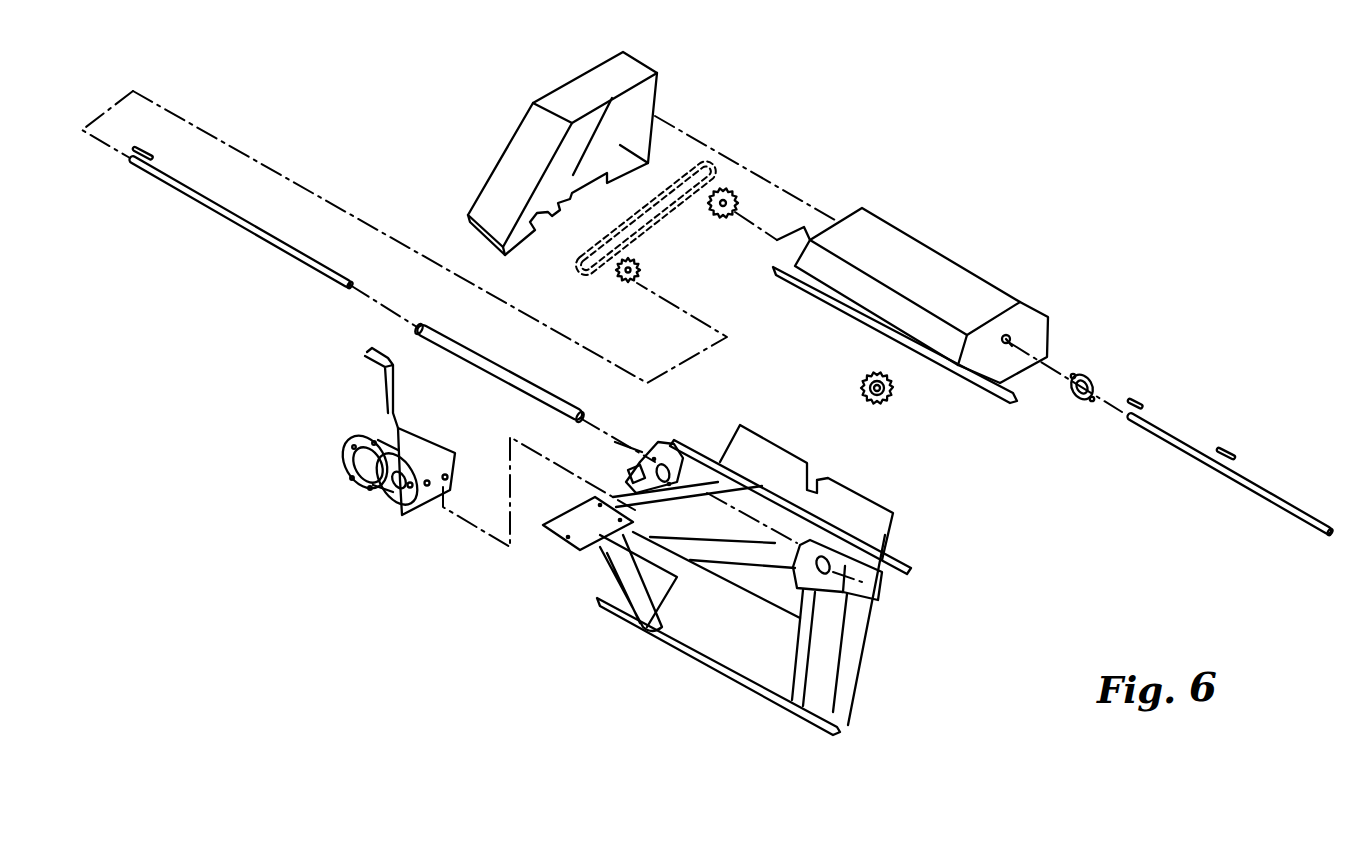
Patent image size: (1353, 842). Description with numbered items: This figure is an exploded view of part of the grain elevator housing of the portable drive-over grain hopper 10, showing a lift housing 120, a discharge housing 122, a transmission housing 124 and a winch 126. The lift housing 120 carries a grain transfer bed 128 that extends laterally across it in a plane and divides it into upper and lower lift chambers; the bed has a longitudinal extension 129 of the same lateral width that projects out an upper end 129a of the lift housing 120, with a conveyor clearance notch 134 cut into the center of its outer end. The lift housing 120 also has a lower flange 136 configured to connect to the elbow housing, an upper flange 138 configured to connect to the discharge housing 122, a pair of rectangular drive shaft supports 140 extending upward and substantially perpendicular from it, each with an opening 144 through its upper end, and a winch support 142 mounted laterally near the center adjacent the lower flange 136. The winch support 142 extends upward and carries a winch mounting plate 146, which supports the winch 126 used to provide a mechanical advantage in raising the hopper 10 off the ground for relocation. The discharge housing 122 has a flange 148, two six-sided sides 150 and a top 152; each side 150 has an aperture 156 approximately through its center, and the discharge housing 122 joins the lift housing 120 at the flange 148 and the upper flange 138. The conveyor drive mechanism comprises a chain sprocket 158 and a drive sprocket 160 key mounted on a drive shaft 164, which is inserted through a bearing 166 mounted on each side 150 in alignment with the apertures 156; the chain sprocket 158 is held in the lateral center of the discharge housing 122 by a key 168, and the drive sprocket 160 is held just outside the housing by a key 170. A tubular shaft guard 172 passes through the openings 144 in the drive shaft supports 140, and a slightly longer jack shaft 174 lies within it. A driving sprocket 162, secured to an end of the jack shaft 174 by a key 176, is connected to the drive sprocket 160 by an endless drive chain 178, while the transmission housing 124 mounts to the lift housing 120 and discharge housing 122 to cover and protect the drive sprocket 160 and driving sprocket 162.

The portable drive-over grain hopper 10 is at (968, 210).
The lift housing 120 is at (836, 695).
The discharge housing 122 is at (880, 227).
The transmission housing 124 is at (589, 101).
The winch 126 is at (363, 495).
The grain transfer bed 128 is at (755, 560).
The longitudinal extension 129 is at (750, 452).
The upper end 129a is at (898, 560).
The conveyor clearance notch 134 is at (812, 480).
The lower flange 136 is at (815, 725).
The upper flange 138 is at (913, 583).
The drive shaft supports 140 is at (837, 595).
The winch support 142 is at (622, 590).
The opening 144 is at (878, 600).
The winch mounting plate 146 is at (565, 520).
The flange 148 is at (1003, 405).
The sides 150 is at (1042, 316).
The top 152 is at (958, 276).
The aperture 156 is at (1010, 347).
The chain sprocket 158 is at (862, 372).
The drive sprocket 160 is at (737, 196).
The driving sprocket 162 is at (620, 285).
The drive shaft 164 is at (1265, 492).
The bearing 166 is at (1092, 372).
The key 168 is at (1228, 448).
The key 170 is at (1140, 397).
The tubular shaft guard 172 is at (412, 330).
The jack shaft 174 is at (228, 213).
The key 176 is at (148, 152).
The endless drive chain 178 is at (672, 160).